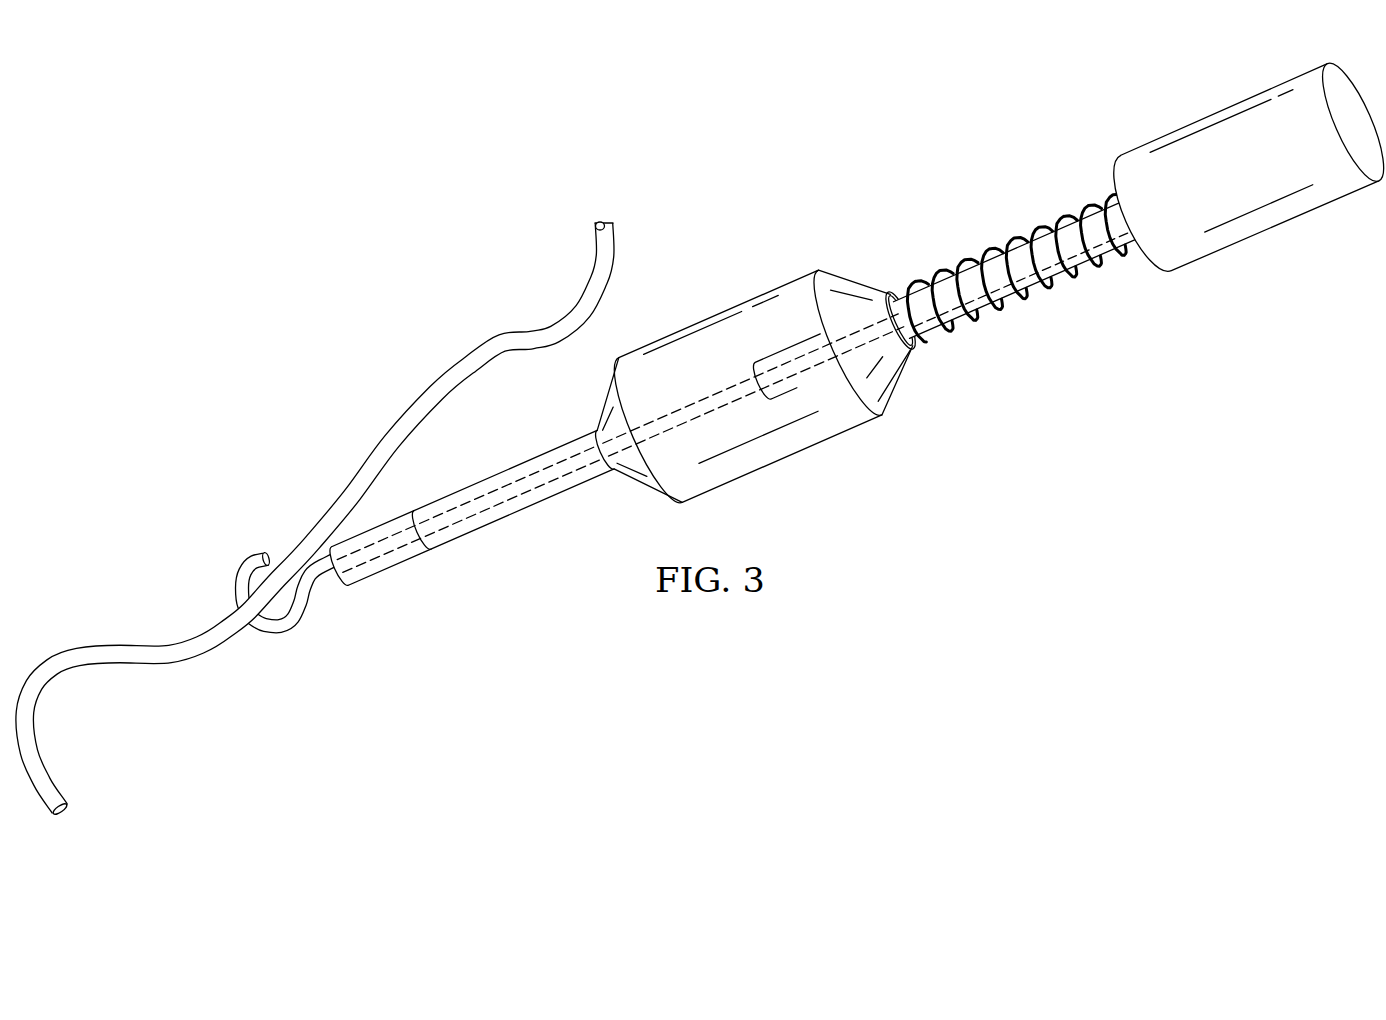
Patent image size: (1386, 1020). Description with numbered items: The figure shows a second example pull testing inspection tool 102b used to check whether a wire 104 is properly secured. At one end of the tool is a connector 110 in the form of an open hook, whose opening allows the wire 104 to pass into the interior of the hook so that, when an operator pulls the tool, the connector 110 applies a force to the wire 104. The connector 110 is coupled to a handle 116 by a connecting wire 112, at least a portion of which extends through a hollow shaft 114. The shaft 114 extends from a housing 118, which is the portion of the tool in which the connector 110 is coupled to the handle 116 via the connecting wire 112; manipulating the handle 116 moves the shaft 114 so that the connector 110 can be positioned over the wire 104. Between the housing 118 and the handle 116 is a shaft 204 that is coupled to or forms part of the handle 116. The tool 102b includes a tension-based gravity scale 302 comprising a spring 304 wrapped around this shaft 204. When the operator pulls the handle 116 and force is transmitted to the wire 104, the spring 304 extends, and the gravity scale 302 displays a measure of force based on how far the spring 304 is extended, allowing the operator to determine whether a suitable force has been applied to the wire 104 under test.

The inspection tool 102b is at (689, 209).
The wire 104 is at (413, 399).
The connector 110 is at (253, 558).
The connecting wire 112 is at (430, 550).
The hollow shaft 114 is at (492, 524).
The handle 116 is at (1278, 228).
The housing 118 is at (785, 457).
The shaft 204 is at (935, 291).
The tension-based gravity scale 302 is at (1019, 334).
The spring 304 is at (1097, 268).